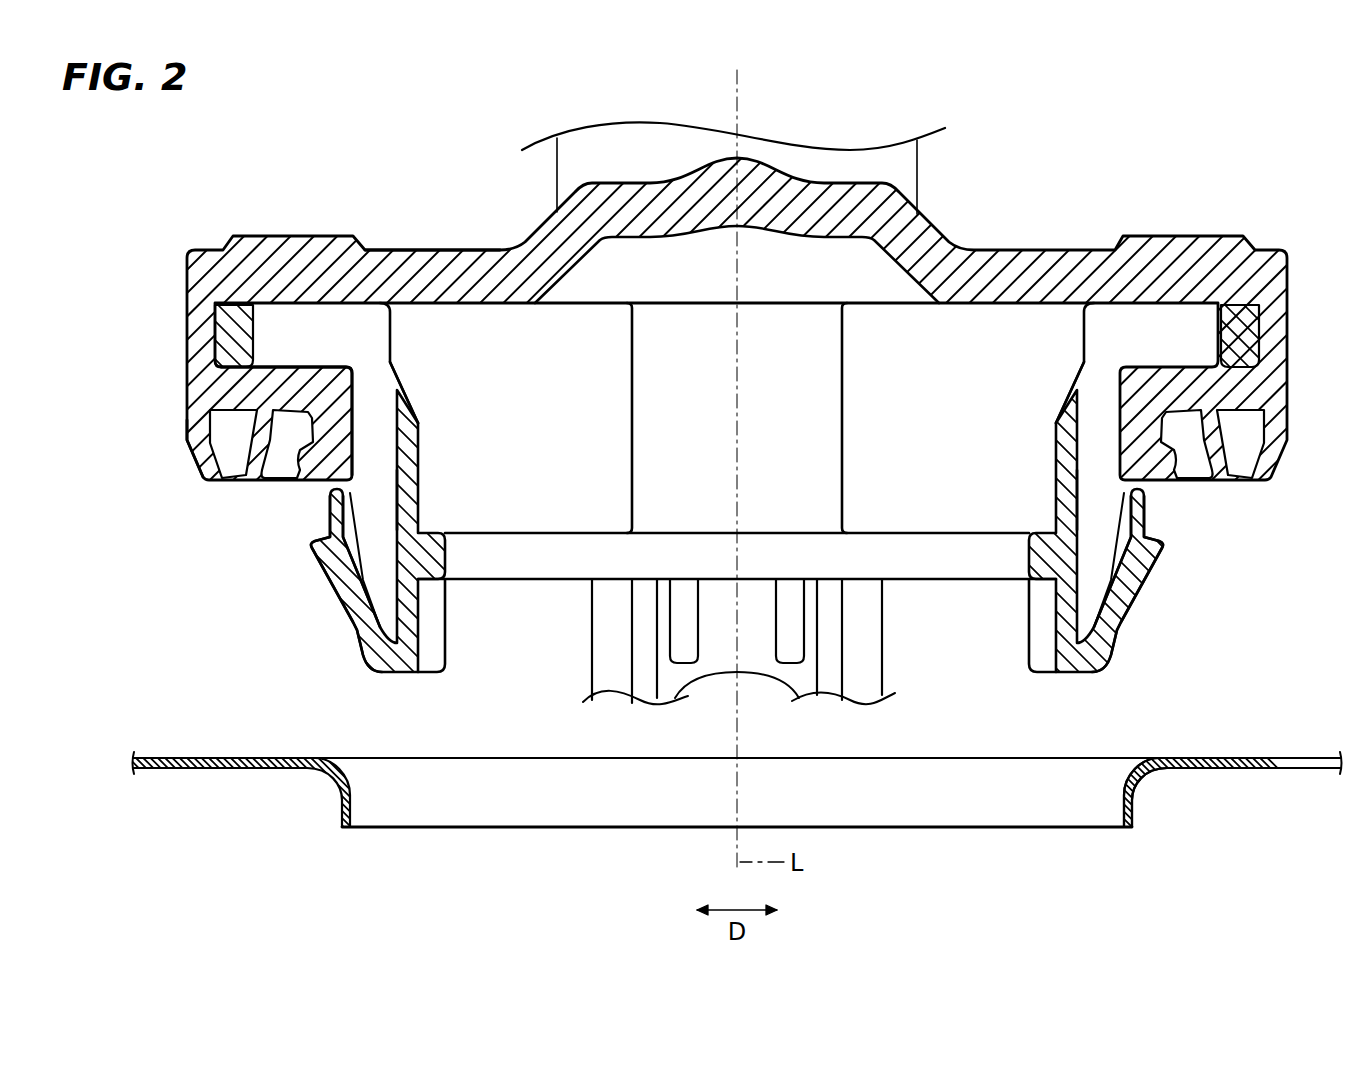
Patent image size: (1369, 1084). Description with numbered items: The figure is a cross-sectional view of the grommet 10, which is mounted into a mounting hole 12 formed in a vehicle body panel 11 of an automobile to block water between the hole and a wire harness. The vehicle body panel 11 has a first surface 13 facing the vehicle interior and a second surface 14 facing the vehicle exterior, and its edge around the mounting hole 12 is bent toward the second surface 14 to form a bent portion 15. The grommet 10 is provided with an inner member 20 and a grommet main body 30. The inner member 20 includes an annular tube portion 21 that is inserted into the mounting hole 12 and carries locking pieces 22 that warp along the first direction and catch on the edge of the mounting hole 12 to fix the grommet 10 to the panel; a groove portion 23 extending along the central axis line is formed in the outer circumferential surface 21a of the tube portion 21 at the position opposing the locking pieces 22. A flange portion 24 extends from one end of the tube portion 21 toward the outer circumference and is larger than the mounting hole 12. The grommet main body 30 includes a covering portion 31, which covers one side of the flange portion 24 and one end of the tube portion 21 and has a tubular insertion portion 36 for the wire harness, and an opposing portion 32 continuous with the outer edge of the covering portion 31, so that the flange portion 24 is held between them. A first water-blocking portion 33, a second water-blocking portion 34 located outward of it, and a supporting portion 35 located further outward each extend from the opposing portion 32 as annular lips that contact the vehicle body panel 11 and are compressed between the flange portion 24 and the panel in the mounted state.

The grommet 10 is at (1160, 162).
The vehicle body panel 11 is at (1304, 753).
The mounting hole 12 is at (1118, 826).
The first surface 13 is at (1244, 757).
The second surface 14 is at (1271, 770).
The bent portion 15 is at (1138, 770).
The inner member 20 is at (1122, 632).
The tube portion 21 is at (392, 455).
The outer circumferential surface 21a is at (350, 418).
The locking pieces 22 is at (322, 563).
The groove portion 23 is at (393, 501).
The flange portion 24 is at (307, 332).
The grommet main body 30 is at (1289, 331).
The covering portion 31 is at (452, 252).
The opposing portion 32 is at (290, 372).
The first water-blocking portion 33 is at (313, 457).
The second water-blocking portion 34 is at (237, 457).
The supporting portion 35 is at (187, 440).
The insertion portion 36 is at (918, 160).